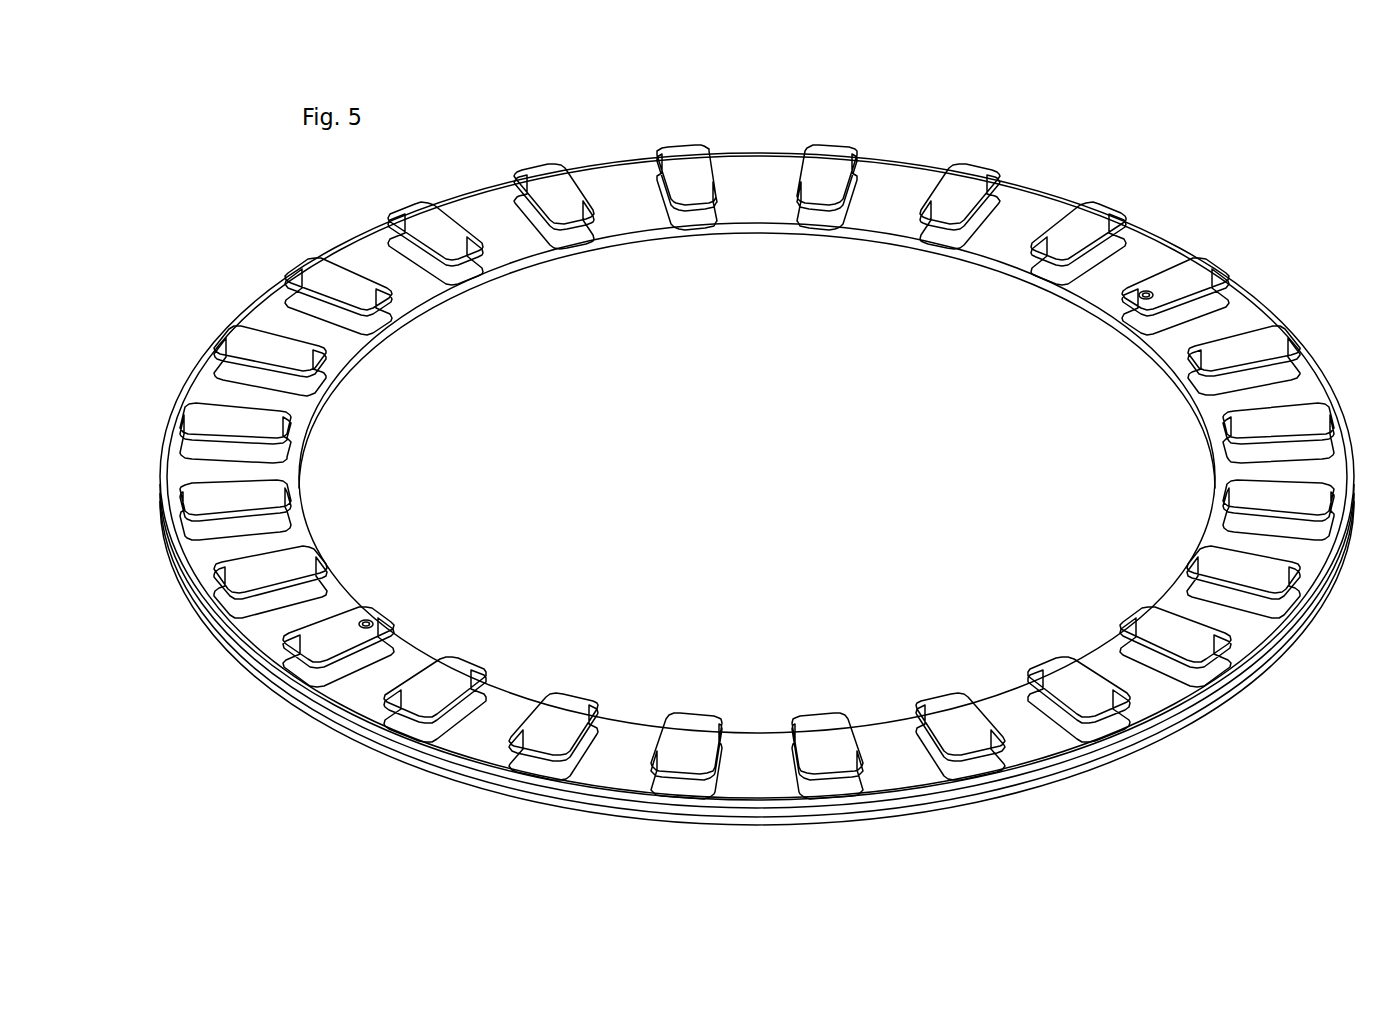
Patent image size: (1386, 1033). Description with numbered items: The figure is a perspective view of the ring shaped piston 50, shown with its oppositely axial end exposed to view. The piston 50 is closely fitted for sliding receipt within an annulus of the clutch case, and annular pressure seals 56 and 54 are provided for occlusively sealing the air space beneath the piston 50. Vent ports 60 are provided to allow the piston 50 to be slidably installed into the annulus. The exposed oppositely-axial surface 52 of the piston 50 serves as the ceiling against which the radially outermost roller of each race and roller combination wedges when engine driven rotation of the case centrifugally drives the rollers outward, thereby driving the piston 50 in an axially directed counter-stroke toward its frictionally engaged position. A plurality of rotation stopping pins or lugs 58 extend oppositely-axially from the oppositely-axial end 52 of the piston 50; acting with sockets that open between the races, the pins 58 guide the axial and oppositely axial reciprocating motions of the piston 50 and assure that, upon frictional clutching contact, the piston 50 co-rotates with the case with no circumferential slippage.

The ring shaped piston 50 is at (848, 130).
The oppositely-axial surface 52 is at (618, 200).
The annular pressure seal 54 is at (1120, 760).
The annular pressure seal 56 is at (880, 247).
The rotation stopping pin 58 is at (960, 185).
The vent port 60 is at (1147, 296).